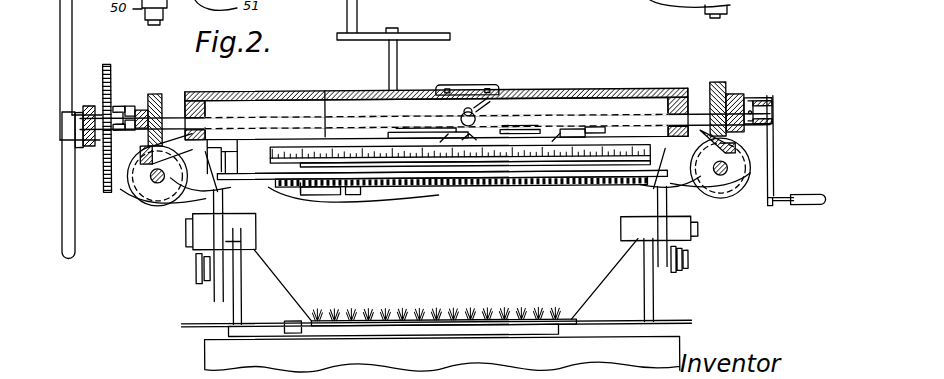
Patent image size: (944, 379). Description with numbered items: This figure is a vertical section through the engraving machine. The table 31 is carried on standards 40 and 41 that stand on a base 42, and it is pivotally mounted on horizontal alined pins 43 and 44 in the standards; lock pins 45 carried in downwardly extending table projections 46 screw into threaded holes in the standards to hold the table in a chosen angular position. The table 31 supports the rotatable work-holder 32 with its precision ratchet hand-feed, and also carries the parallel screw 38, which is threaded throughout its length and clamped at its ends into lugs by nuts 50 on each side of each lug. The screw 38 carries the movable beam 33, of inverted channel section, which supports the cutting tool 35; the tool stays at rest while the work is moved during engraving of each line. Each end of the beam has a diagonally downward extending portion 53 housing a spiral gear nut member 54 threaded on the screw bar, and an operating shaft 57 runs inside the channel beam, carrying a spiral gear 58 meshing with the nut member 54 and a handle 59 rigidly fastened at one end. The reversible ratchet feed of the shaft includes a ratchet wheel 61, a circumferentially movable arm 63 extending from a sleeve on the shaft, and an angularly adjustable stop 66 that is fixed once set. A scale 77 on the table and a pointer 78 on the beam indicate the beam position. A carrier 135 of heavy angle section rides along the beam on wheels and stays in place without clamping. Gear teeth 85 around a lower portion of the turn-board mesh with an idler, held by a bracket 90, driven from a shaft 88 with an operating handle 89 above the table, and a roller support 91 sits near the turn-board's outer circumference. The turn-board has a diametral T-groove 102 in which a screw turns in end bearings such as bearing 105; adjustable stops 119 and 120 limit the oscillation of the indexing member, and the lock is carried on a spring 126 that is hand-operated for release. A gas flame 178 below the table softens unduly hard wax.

The table 31 is at (268, 172).
The rotatable work-holder 32 is at (598, 128).
The movable beam 33 is at (550, 130).
The cutting tool 35 is at (443, 130).
The parallel screw 38 is at (157, 174).
The standard 40 is at (117, 100).
The standard 41 is at (650, 301).
The base 42 is at (442, 354).
The pin 43 is at (185, 236).
The pin 44 is at (692, 230).
The lock pin 45 is at (192, 262).
The table projection 46 is at (205, 270).
The nut 50 is at (452, 147).
The diagonally downward extending portion 53 is at (435, 189).
The spiral gear nut member 54 is at (150, 205).
The operating shaft 57 is at (244, 100).
The spiral gear 58 is at (718, 88).
The handle 59 is at (732, 172).
The ratchet wheel 61 is at (103, 76).
The circumferentially movable arm 63 is at (96, 145).
The angularly adjustable stop 66 is at (134, 102).
The scale 77 is at (442, 159).
The pointer 78 is at (226, 149).
The gear teeth 85 is at (431, 186).
The shaft 88 is at (385, 64).
The operating handle 89 is at (357, 13).
The bracket 90 is at (370, 196).
The roller support 91 is at (491, 186).
The diametral T-groove 102 is at (490, 103).
The rear end bearing 105 is at (476, 130).
The adjustable stop 119 is at (651, 90).
The adjustable stop 120 is at (580, 130).
The spring 126 is at (325, 90).
The carrier 135 is at (464, 87).
The gas flame 178 is at (442, 313).